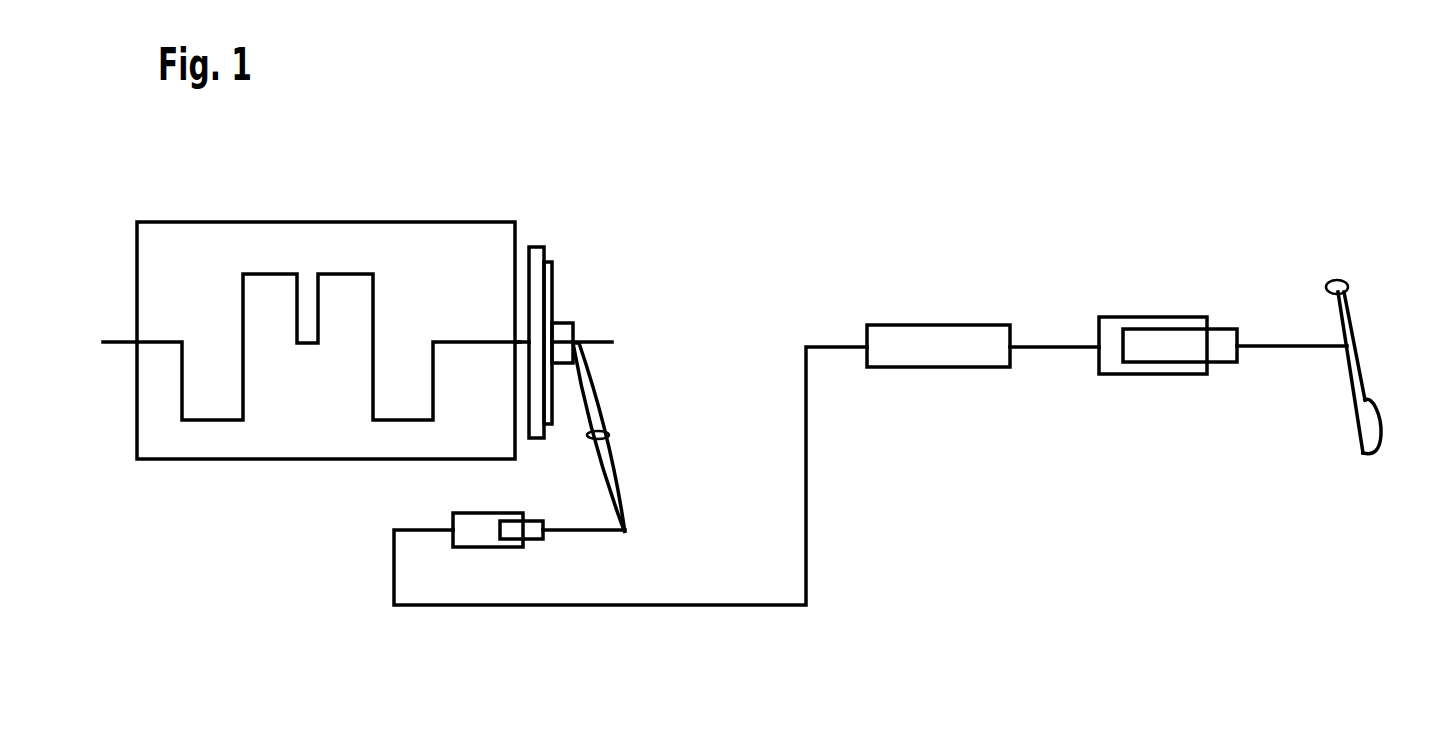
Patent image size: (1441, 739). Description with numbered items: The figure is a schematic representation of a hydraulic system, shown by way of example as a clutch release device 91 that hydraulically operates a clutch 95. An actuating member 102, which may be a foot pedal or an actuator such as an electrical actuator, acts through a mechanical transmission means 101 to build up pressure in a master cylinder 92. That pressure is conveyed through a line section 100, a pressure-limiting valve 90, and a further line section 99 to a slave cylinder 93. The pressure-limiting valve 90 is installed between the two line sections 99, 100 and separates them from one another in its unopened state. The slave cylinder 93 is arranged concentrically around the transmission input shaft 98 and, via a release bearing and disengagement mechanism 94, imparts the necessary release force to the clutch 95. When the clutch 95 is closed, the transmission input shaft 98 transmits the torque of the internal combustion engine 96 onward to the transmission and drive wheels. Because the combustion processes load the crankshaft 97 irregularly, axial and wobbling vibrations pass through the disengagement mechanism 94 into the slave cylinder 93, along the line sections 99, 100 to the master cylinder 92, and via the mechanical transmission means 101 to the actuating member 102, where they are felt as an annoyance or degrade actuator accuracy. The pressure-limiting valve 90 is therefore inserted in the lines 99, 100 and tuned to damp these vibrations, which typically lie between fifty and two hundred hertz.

The pressure-limiting valve 90 is at (938, 340).
The clutch release device 91 is at (1383, 356).
The master cylinder 92 is at (1159, 384).
The slave cylinder 93 is at (494, 565).
The disengagement mechanism 94 is at (627, 458).
The clutch 95 is at (559, 246).
The internal combustion engine 96 is at (459, 265).
The crankshaft 97 is at (237, 340).
The transmission input shaft 98 is at (600, 340).
The line section 99 is at (806, 440).
The line section 100 is at (1058, 350).
The mechanical transmission means 101 is at (1276, 343).
The actuating member 102 is at (1351, 363).